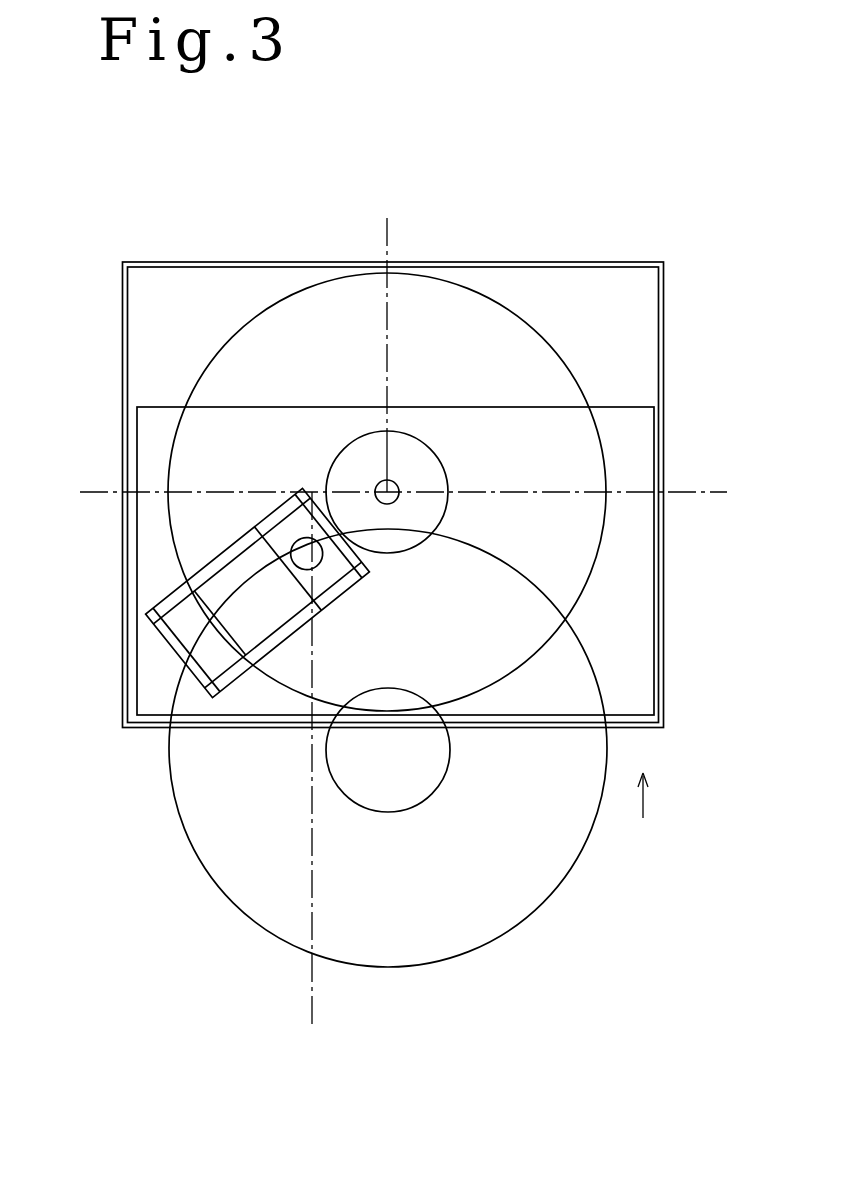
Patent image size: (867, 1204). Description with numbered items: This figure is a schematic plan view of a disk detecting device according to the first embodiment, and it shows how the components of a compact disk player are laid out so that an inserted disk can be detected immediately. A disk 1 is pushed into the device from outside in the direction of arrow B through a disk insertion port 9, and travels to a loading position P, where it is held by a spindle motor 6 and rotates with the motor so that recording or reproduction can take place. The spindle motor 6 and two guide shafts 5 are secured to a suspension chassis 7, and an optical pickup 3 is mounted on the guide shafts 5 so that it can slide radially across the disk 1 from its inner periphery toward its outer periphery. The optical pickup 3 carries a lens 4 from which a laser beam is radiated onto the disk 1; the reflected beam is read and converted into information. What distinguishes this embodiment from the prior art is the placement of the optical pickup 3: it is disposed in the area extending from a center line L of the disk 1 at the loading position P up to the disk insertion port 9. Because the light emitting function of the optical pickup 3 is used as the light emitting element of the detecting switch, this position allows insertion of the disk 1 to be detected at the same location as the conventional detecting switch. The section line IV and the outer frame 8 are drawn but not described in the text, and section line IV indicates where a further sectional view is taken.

The disk 1 is at (292, 873).
The optical pickup 3 is at (258, 525).
The lens 4 is at (273, 537).
The guide shafts 5 is at (217, 667).
The spindle motor 6 is at (446, 477).
The suspension chassis 7 is at (235, 407).
The housing 8 is at (167, 263).
The disk insertion port 9 is at (627, 722).
The loading position P is at (572, 373).
The center line L is at (687, 490).
The arrow B is at (643, 813).
The section line IV is at (389, 240).